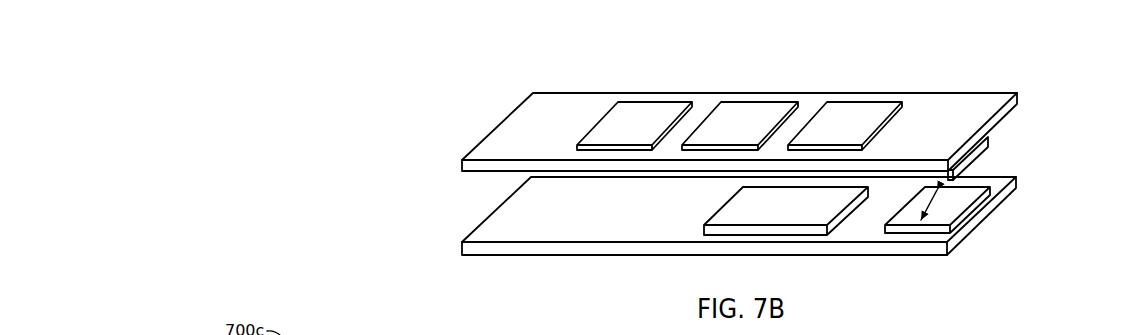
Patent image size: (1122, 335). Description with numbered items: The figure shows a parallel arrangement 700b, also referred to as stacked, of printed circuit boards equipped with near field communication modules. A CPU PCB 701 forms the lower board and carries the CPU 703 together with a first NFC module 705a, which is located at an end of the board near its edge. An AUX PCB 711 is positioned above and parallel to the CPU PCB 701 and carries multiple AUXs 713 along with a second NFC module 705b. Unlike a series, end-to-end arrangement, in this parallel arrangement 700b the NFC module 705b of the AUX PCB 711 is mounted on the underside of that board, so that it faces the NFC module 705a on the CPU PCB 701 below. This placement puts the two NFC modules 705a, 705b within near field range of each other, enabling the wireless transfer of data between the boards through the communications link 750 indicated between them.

The parallel arrangement 700b is at (582, 65).
The CPU PCB 701 is at (492, 233).
The CPU 703 is at (742, 213).
The NFC module 705a is at (983, 224).
The NFC module 705b is at (985, 152).
The AUX PCB 711 is at (925, 110).
The AUXs 713 is at (863, 108).
The communications link 750 is at (928, 204).